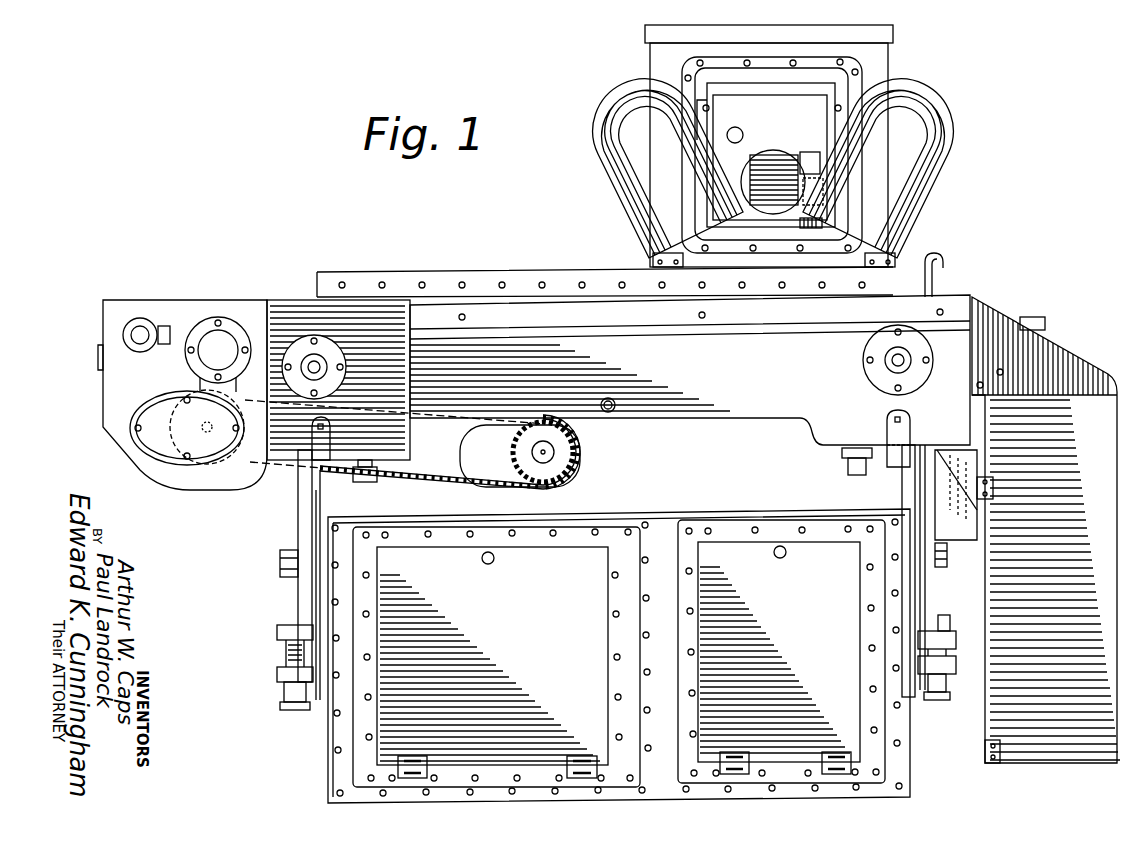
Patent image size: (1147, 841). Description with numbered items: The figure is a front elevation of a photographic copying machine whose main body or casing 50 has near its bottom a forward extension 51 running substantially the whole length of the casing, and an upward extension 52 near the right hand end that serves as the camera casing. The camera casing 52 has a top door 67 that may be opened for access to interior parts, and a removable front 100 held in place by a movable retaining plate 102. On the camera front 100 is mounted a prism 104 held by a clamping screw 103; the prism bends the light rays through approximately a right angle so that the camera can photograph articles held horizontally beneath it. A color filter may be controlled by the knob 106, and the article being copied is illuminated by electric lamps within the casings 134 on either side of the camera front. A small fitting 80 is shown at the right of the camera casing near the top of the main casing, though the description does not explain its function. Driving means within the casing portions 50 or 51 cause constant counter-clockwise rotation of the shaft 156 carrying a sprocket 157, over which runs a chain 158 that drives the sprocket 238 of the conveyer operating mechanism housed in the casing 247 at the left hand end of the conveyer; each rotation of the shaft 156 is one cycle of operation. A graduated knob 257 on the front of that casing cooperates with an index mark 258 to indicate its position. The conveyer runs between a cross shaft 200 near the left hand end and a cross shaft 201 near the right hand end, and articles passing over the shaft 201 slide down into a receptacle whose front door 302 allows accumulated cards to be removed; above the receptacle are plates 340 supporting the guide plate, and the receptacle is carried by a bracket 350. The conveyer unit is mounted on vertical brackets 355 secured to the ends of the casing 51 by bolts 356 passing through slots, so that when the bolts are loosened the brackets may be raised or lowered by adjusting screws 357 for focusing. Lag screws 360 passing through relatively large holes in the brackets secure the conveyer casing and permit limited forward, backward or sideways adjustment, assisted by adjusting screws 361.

The main body or casing 50 is at (458, 272).
The forward extension 51 is at (597, 516).
The upward extension 52 is at (888, 64).
The top door 67 is at (893, 35).
The pipe 80 is at (938, 258).
The removable front 100 is at (797, 90).
The movable retaining plate 102 is at (712, 100).
The clamping screw 103 is at (818, 228).
The prism 104 is at (783, 163).
The knob 106 is at (745, 130).
The casings 134 is at (598, 150).
The shaft 156 is at (580, 460).
The sprocket 157 is at (512, 448).
The chain 158 is at (500, 483).
The cross shaft 200 is at (322, 368).
The cross shaft 201 is at (890, 362).
The sprocket 238 is at (166, 468).
The casing 247 is at (108, 392).
The knob 257 is at (150, 318).
The index mark 258 is at (195, 354).
The door 302 is at (1046, 530).
The front and back plates 340 is at (1075, 358).
The bracket 350 is at (966, 498).
The vertical brackets 355 is at (297, 508).
The bolts 356 is at (280, 558).
The adjusting screws 357 is at (277, 698).
The lag screws 360 is at (368, 483).
The adjusting screws 361 is at (332, 430).